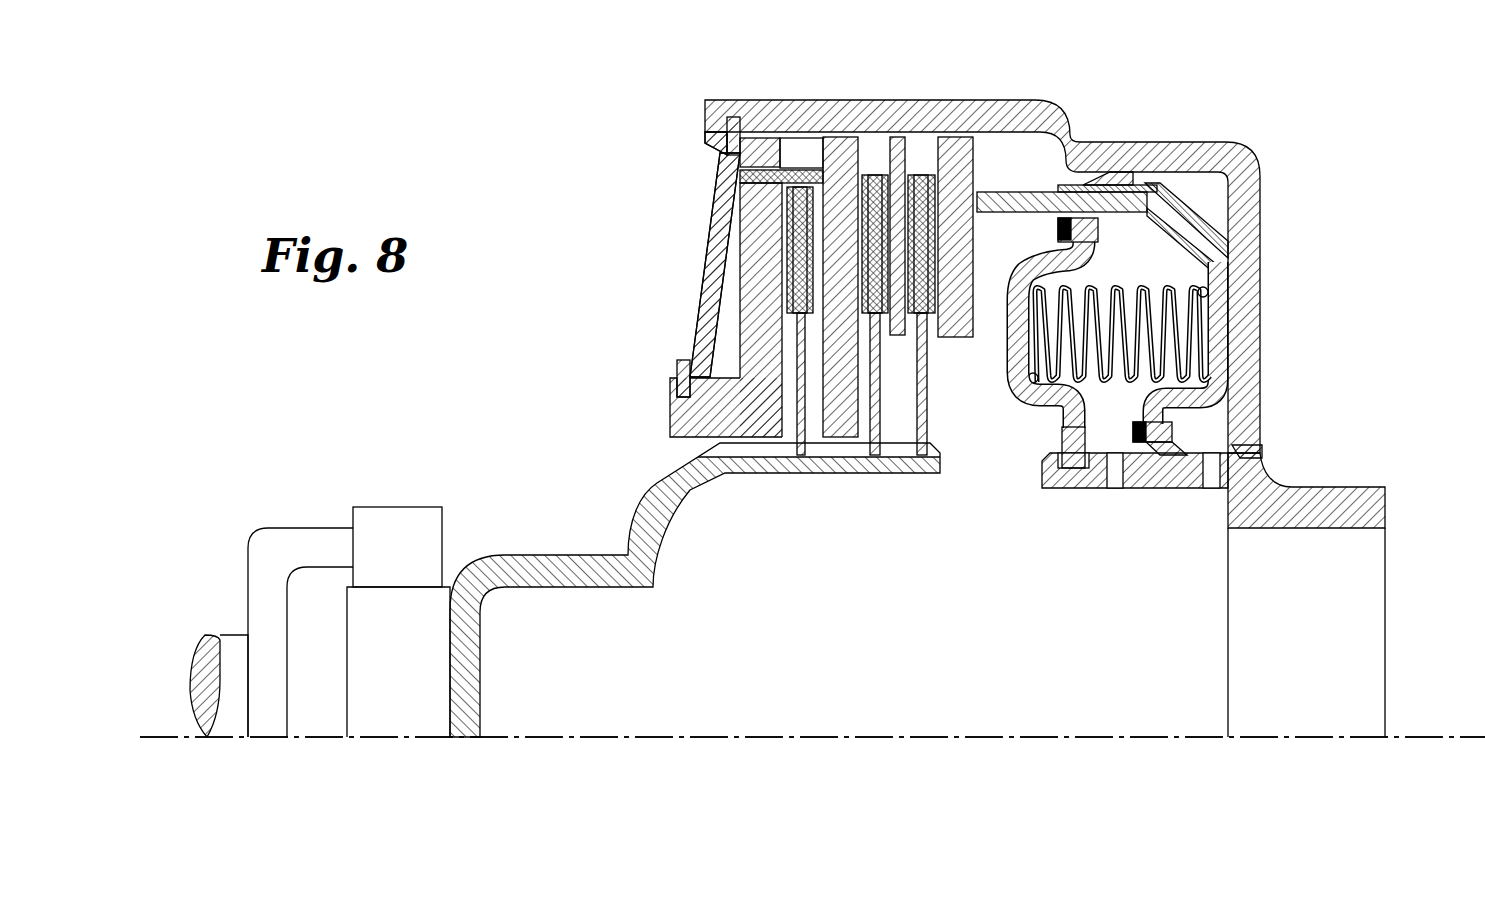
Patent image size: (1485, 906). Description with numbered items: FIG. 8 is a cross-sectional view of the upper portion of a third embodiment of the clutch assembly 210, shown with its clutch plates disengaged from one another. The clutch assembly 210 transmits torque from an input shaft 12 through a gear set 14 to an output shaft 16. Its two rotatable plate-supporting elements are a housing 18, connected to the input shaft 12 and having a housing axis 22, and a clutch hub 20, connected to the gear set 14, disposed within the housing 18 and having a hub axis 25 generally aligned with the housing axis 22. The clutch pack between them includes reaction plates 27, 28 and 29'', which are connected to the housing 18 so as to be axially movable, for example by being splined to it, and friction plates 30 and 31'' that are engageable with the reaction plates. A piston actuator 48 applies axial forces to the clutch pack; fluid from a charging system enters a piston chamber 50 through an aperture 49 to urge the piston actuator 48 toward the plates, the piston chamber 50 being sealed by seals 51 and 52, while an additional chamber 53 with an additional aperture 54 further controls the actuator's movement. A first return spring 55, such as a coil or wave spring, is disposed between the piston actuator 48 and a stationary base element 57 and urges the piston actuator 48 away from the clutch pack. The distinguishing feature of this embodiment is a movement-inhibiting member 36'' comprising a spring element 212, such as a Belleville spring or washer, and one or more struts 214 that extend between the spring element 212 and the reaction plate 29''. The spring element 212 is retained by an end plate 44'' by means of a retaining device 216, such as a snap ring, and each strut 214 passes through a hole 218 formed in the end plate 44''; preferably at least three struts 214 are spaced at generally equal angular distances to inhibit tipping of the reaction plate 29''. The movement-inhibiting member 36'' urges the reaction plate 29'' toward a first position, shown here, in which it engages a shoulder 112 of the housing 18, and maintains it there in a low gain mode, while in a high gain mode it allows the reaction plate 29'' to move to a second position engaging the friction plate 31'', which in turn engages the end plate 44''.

The input shaft 12 is at (1330, 487).
The gear set 14 is at (443, 540).
The output shaft 16 is at (227, 633).
The housing 18 is at (1262, 192).
The clutch hub 20 is at (545, 555).
The housing axis 22 is at (1432, 740).
The hub axis 25 is at (1432, 740).
The reaction plate 27 is at (963, 150).
The reaction plate 28 is at (898, 144).
The reaction plate 29'' is at (789, 107).
The friction plate 30 is at (872, 174).
The friction plate 31'' is at (826, 354).
The movement-inhibiting member 36'' is at (672, 171).
The end plate 44'' is at (664, 407).
The piston actuator 48 is at (1218, 233).
The aperture 49 is at (1208, 478).
The piston chamber 50 is at (1225, 420).
The seal 51 is at (1078, 190).
The seal 52 is at (1147, 442).
The additional chamber 53 is at (1103, 457).
The additional aperture 54 is at (1117, 462).
The first return spring 55 is at (1192, 280).
The stationary base element 57 is at (1038, 400).
The shoulder 112 is at (843, 160).
The clutch assembly 210 is at (642, 247).
The spring element 212 is at (702, 297).
The struts 214 is at (745, 182).
The retaining device 216 is at (677, 367).
The hole 218 is at (735, 150).